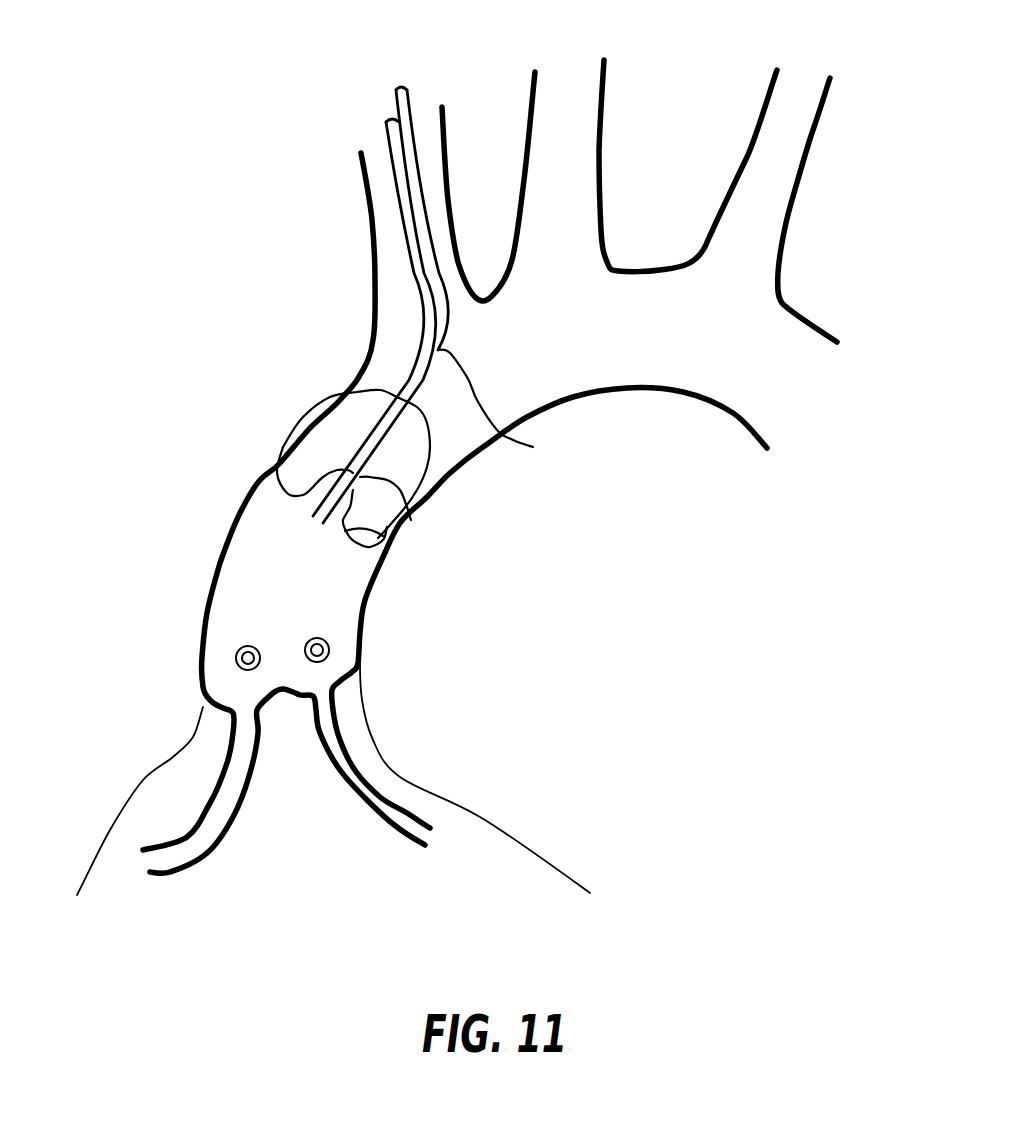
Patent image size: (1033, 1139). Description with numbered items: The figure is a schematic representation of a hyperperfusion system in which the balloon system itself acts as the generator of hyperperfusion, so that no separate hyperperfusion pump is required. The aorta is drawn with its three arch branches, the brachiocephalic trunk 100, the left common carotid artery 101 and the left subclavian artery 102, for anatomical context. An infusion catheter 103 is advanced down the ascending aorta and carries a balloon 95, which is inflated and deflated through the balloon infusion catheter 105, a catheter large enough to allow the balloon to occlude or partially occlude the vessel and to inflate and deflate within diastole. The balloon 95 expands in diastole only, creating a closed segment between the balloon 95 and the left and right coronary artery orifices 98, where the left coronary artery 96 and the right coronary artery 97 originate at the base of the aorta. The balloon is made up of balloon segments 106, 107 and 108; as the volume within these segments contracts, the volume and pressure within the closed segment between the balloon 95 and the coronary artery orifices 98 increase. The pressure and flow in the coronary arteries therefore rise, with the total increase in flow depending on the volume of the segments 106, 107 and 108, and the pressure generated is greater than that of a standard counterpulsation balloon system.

The balloon 95 is at (415, 467).
The left coronary artery 96 is at (373, 797).
The right coronary artery 97 is at (230, 782).
The coronary artery orifices 98 is at (237, 660).
The brachiocephalic trunk 100 is at (384, 209).
The left common carotid artery 101 is at (582, 157).
The left subclavian artery 102 is at (763, 237).
The infusion catheter 103 is at (317, 510).
The balloon infusion catheter 105 is at (533, 447).
The balloon segment 106 is at (400, 563).
The balloon segment 107 is at (412, 520).
The balloon segment 108 is at (283, 447).